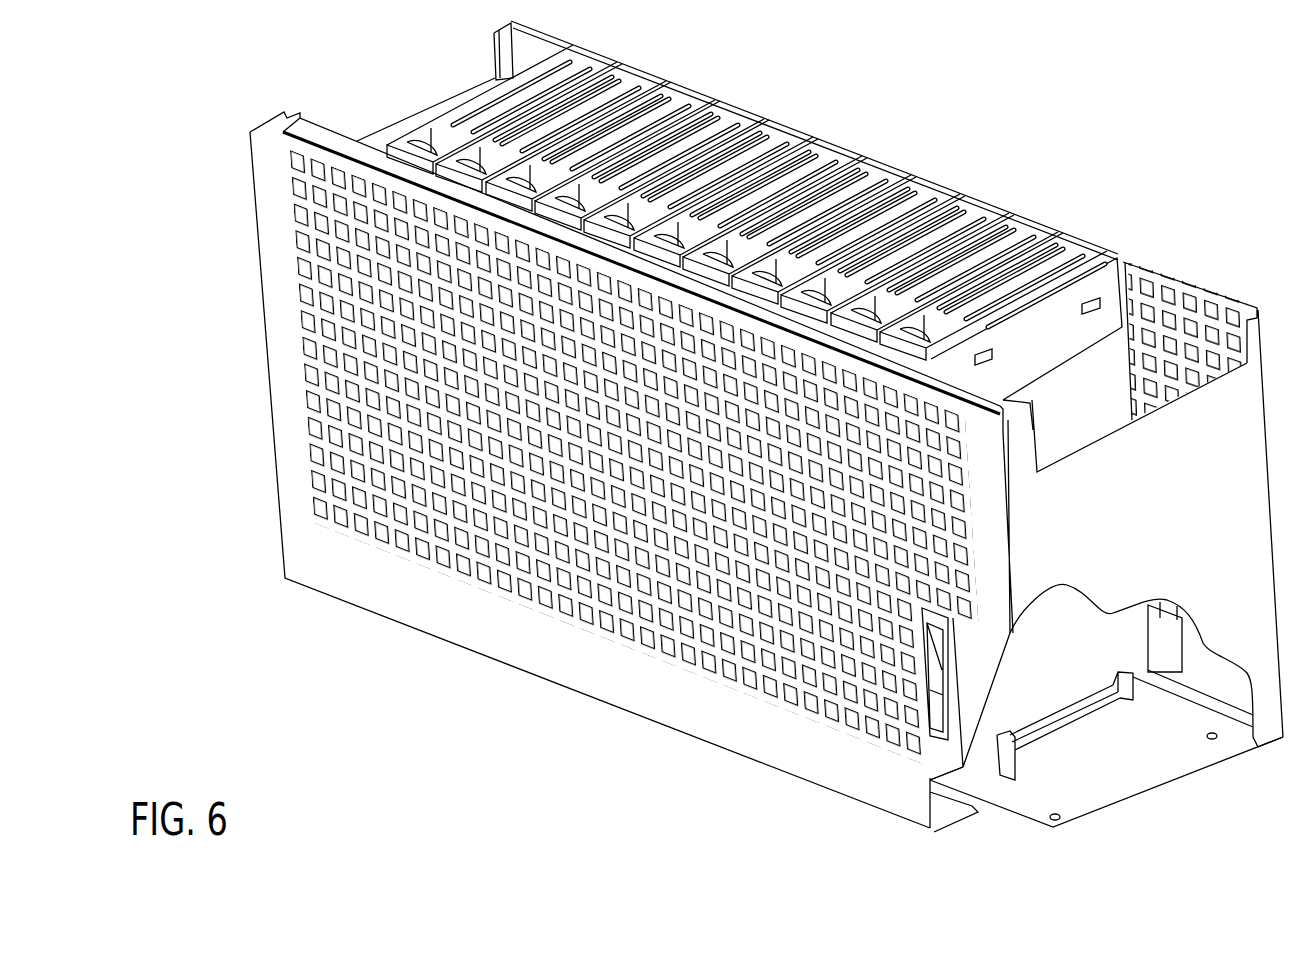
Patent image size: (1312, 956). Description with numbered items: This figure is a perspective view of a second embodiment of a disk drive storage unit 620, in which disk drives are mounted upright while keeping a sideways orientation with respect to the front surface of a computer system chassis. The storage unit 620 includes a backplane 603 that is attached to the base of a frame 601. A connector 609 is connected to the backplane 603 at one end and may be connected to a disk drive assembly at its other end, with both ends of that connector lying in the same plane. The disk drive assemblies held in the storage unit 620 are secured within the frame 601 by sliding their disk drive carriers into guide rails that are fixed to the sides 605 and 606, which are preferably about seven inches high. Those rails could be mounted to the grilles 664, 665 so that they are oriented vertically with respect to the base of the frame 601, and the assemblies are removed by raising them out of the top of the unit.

The frame 601 is at (820, 819).
The backplane 603 is at (1106, 705).
The side 605 is at (595, 470).
The side 606 is at (1226, 316).
The connector 609 is at (1065, 726).
The disk drive storage unit 620 is at (997, 167).
The grille 664 is at (338, 317).
The grille 665 is at (1158, 346).